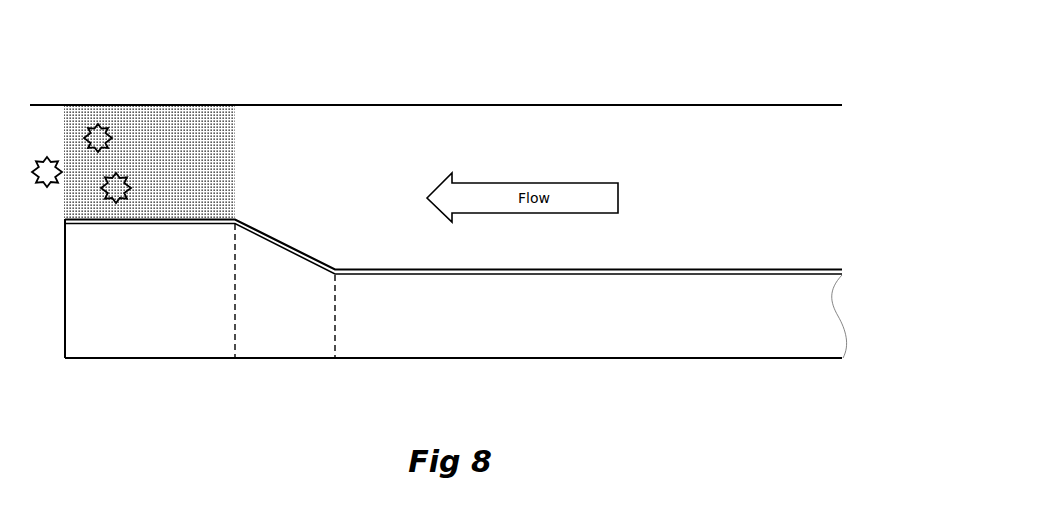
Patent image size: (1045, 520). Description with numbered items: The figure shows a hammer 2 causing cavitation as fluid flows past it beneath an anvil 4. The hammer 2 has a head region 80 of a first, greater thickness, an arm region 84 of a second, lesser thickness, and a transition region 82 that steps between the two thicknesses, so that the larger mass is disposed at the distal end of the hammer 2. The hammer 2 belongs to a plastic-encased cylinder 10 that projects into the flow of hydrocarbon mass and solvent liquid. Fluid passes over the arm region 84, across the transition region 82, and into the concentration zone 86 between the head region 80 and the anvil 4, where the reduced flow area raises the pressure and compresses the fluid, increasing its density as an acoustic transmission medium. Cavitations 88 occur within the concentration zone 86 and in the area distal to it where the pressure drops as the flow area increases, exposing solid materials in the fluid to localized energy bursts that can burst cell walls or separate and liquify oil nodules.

The hammer 2 is at (351, 392).
The anvil 4 is at (345, 104).
The plastic-encased cylinder 10 is at (842, 272).
The head region 80 is at (172, 360).
The transition region 82 is at (300, 360).
The arm region 84 is at (505, 358).
The concentration zone 86 is at (235, 165).
The cavitations 88 is at (102, 123).